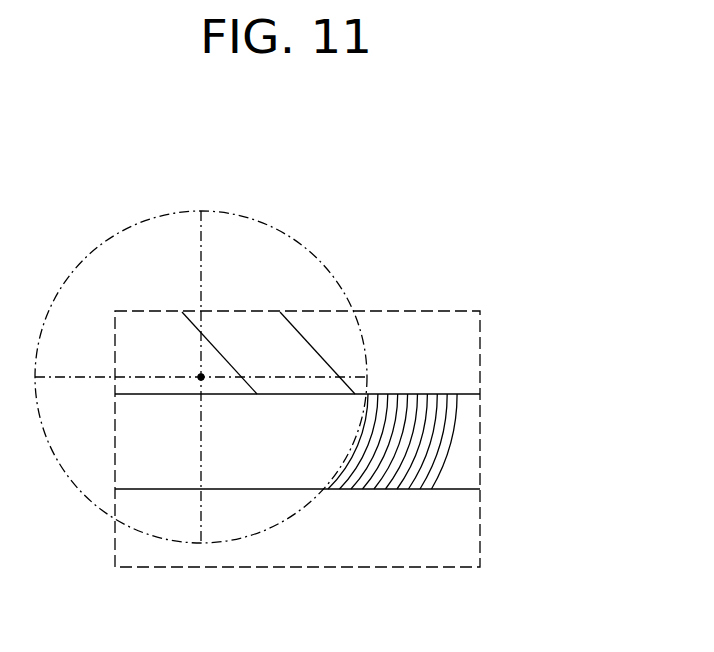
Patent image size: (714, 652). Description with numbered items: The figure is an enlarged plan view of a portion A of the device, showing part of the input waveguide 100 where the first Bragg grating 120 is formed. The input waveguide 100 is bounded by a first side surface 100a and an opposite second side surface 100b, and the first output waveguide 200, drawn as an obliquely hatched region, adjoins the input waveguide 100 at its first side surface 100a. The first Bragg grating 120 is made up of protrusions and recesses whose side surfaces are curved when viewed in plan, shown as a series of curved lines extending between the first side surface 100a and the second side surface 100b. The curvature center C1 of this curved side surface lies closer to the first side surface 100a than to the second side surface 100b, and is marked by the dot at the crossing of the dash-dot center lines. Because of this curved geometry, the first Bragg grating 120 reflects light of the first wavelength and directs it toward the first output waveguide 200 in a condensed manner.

The portion A is at (493, 140).
The curvature center C1 is at (199, 376).
The first output waveguide 200 is at (246, 332).
The first Bragg grating 120 is at (403, 378).
The first side surface 100a is at (462, 394).
The input waveguide 100 is at (468, 443).
The second side surface 100b is at (462, 489).